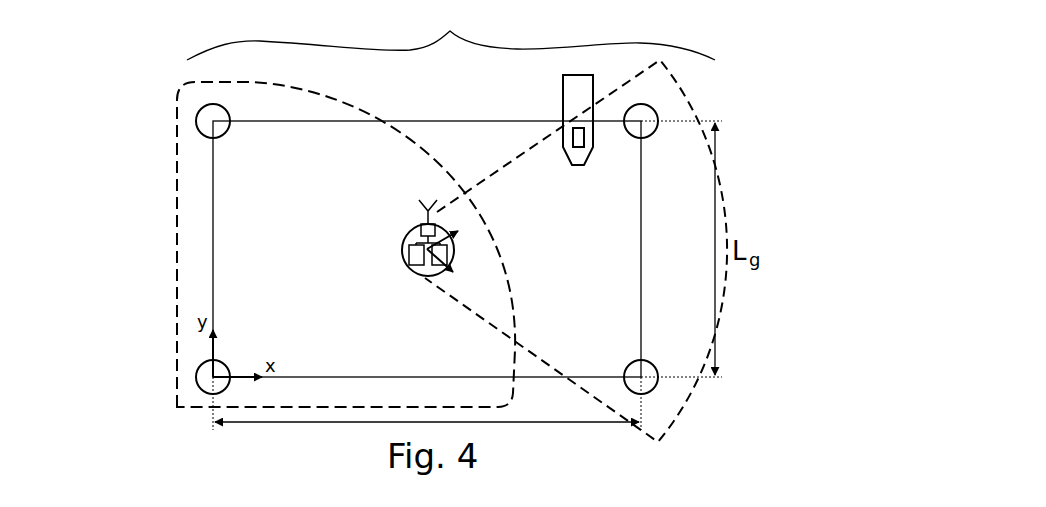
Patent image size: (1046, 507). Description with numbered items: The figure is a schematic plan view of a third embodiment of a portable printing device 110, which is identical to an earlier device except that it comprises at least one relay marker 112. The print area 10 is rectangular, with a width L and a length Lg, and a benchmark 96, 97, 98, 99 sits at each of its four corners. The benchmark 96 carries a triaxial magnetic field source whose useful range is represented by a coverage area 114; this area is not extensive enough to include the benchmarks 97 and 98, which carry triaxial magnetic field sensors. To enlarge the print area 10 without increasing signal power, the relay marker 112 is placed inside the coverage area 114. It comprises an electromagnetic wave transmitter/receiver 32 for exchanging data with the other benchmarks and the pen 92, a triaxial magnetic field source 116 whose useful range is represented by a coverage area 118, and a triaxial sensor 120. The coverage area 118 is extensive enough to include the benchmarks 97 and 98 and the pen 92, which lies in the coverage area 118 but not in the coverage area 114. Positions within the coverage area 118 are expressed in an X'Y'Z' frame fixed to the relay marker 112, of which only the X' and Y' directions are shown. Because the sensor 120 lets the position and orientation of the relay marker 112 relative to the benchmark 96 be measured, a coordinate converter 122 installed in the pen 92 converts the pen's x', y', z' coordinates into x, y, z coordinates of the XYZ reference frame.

The print area 10 is at (641, 255).
The electromagnetic wave transmitter/receiver 32 is at (423, 228).
The pen 92 is at (563, 108).
The benchmark 96 is at (197, 377).
The benchmark 97 is at (658, 383).
The benchmark 98 is at (657, 110).
The benchmark 99 is at (197, 121).
The printing device 110 is at (451, 33).
The relay marker 112 is at (405, 247).
The coverage area 114 is at (177, 218).
The triaxial magnetic field source 116 is at (447, 252).
The coverage area 118 is at (623, 80).
The triaxial sensor 120 is at (410, 265).
The coordinate converter 122 is at (584, 140).